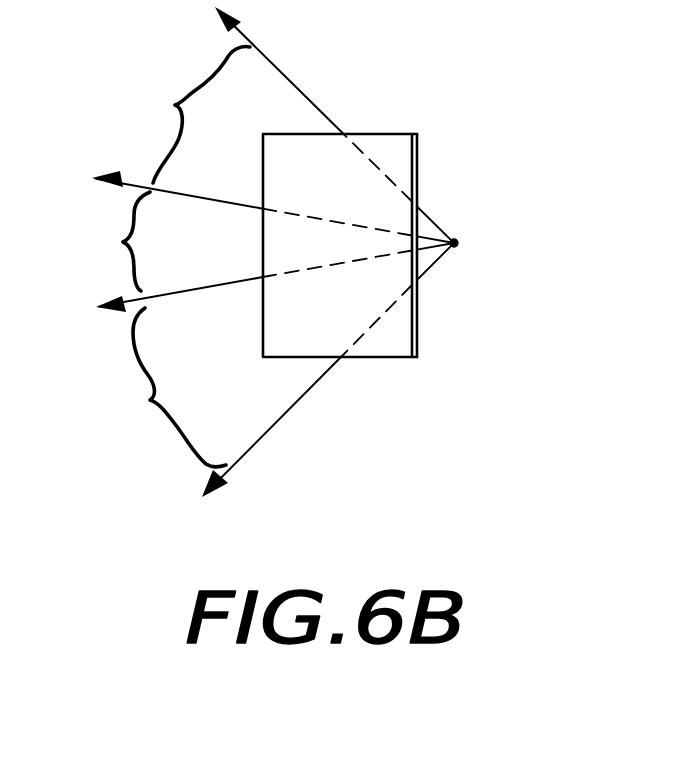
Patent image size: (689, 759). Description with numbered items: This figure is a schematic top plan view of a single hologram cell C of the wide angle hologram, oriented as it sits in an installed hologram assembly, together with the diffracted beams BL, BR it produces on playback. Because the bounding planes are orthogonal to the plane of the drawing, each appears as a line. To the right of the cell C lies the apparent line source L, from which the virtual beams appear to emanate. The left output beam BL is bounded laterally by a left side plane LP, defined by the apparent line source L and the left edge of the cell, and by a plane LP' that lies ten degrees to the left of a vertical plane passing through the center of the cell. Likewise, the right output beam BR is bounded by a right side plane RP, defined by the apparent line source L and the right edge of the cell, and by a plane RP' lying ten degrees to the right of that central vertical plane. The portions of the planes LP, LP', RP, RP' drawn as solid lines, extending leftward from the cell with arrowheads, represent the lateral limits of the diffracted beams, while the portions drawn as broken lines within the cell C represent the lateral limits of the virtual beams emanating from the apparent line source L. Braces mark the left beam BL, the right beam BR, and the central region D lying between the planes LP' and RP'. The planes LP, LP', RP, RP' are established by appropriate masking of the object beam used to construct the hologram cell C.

The hologram cell C is at (418, 162).
The apparent line source L is at (458, 244).
The left side plane LP is at (334, 125).
The right side plane RP is at (328, 370).
The plane ten degrees left of center vertical plane LP' is at (273, 200).
The plane ten degrees right of center vertical plane RP' is at (275, 282).
The left output beam BL is at (176, 115).
The central beam region D is at (111, 241).
The right output beam BR is at (153, 387).